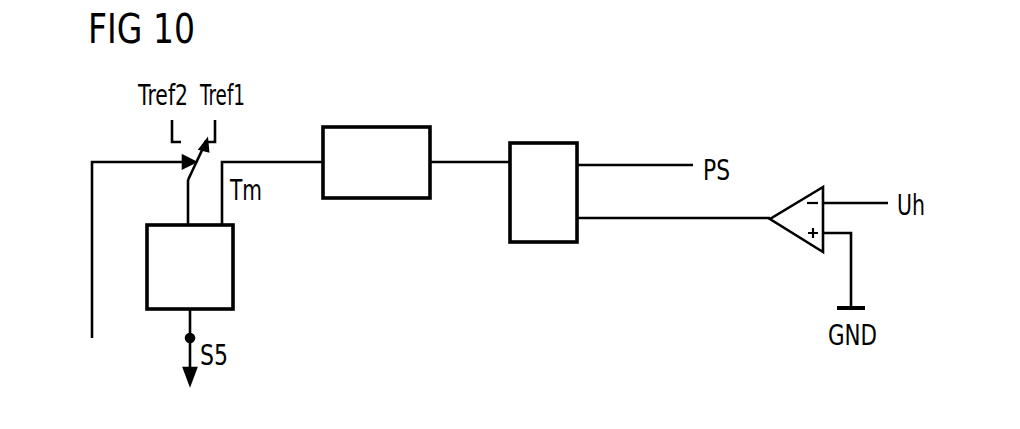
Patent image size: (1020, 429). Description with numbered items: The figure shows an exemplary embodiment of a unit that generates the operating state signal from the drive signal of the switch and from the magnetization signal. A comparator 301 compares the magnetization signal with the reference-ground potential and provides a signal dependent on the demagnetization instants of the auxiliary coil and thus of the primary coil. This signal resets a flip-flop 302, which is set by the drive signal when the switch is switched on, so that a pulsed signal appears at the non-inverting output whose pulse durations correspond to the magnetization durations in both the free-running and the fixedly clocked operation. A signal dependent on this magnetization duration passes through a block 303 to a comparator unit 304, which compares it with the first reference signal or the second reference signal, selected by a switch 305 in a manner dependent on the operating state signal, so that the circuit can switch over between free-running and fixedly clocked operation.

The comparator 301 is at (796, 238).
The flip-flop 302 is at (543, 242).
The delay block 303 is at (377, 198).
The comparator unit 304 is at (233, 267).
The changeover switch 305 is at (206, 151).